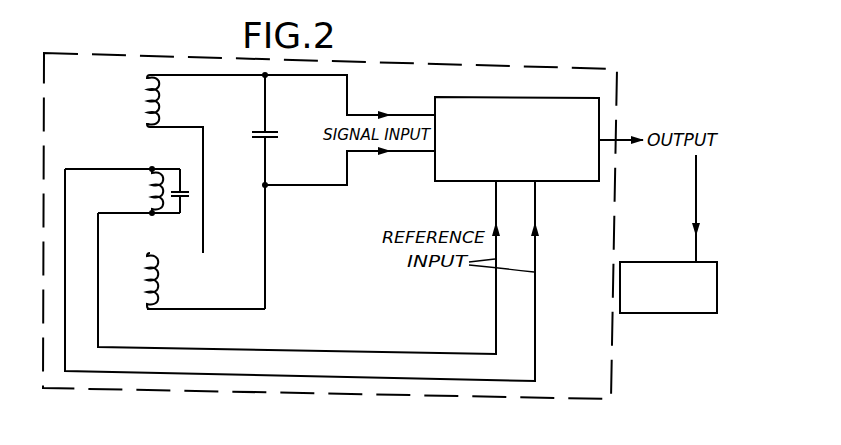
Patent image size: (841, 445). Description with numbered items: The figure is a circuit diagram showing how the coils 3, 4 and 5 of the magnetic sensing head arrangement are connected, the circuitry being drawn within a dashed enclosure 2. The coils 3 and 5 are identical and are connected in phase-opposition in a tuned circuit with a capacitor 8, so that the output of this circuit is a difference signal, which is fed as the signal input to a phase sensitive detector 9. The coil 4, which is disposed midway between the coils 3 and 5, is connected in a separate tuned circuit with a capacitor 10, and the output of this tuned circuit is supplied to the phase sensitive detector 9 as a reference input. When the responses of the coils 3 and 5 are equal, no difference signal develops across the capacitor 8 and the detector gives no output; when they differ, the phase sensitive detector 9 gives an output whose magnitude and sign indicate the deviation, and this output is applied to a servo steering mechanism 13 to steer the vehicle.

The sensing circuit 2 is at (431, 62).
The coil 3 is at (161, 112).
The coil 4 is at (146, 189).
The coil 5 is at (158, 284).
The capacitor 8 is at (270, 129).
The phase sensitive detector 9 is at (550, 98).
The capacitor 10 is at (184, 200).
The servo steering mechanism 13 is at (659, 316).